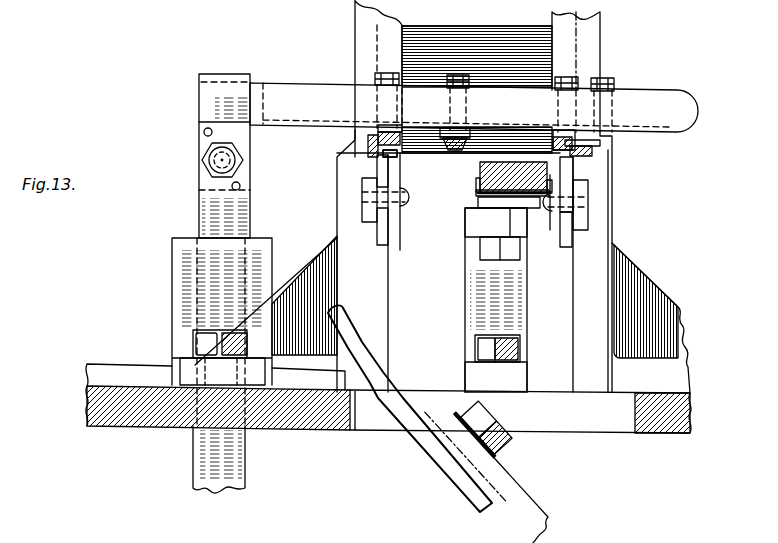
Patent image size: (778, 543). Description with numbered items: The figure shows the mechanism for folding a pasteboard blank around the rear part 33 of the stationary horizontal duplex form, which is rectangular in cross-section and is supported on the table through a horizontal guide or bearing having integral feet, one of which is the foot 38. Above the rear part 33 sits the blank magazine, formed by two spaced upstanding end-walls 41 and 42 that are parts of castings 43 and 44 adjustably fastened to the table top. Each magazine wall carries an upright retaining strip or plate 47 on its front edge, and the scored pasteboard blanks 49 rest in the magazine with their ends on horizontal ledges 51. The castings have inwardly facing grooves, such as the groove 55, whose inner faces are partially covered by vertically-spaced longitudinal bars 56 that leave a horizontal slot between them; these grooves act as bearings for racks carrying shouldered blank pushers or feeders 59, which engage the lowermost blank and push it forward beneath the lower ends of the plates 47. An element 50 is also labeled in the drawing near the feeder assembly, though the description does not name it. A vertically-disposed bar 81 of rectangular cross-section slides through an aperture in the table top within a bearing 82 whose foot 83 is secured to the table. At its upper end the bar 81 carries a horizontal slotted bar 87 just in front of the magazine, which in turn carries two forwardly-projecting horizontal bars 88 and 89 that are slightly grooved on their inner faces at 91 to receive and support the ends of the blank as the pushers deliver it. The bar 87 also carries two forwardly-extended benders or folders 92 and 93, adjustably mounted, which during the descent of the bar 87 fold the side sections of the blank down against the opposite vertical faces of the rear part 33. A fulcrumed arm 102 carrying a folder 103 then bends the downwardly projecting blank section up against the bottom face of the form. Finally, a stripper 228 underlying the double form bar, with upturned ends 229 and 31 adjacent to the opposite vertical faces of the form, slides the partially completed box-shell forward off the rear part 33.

The upturned end 31 is at (312, 418).
The rear part of the form 33 is at (482, 166).
The foot 38 is at (495, 308).
The end-wall 41 is at (355, 33).
The end-wall 42 is at (600, 40).
The casting 43 is at (318, 264).
The casting 44 is at (660, 370).
The retaining strip 47 is at (380, 55).
The pasteboard blanks 49 is at (485, 42).
The block 50 is at (362, 189).
The horizontal ledge 51 is at (387, 150).
The groove 55 is at (590, 212).
The longitudinal bar 56 is at (385, 170).
The blank pusher 59 is at (407, 203).
The vertically-disposed bar 81 is at (232, 470).
The bearing 82 is at (175, 276).
The foot 83 is at (190, 410).
The horizontal slotted bar 87 is at (655, 100).
The horizontal bar 88 is at (368, 145).
The horizontal bar 89 is at (590, 152).
The groove 91 is at (393, 132).
The bender 92 is at (575, 127).
The bender 93 is at (470, 128).
The arm 102 is at (528, 507).
The folder 103 is at (345, 340).
The stripper 228 is at (500, 200).
The upturned end 229 is at (478, 195).